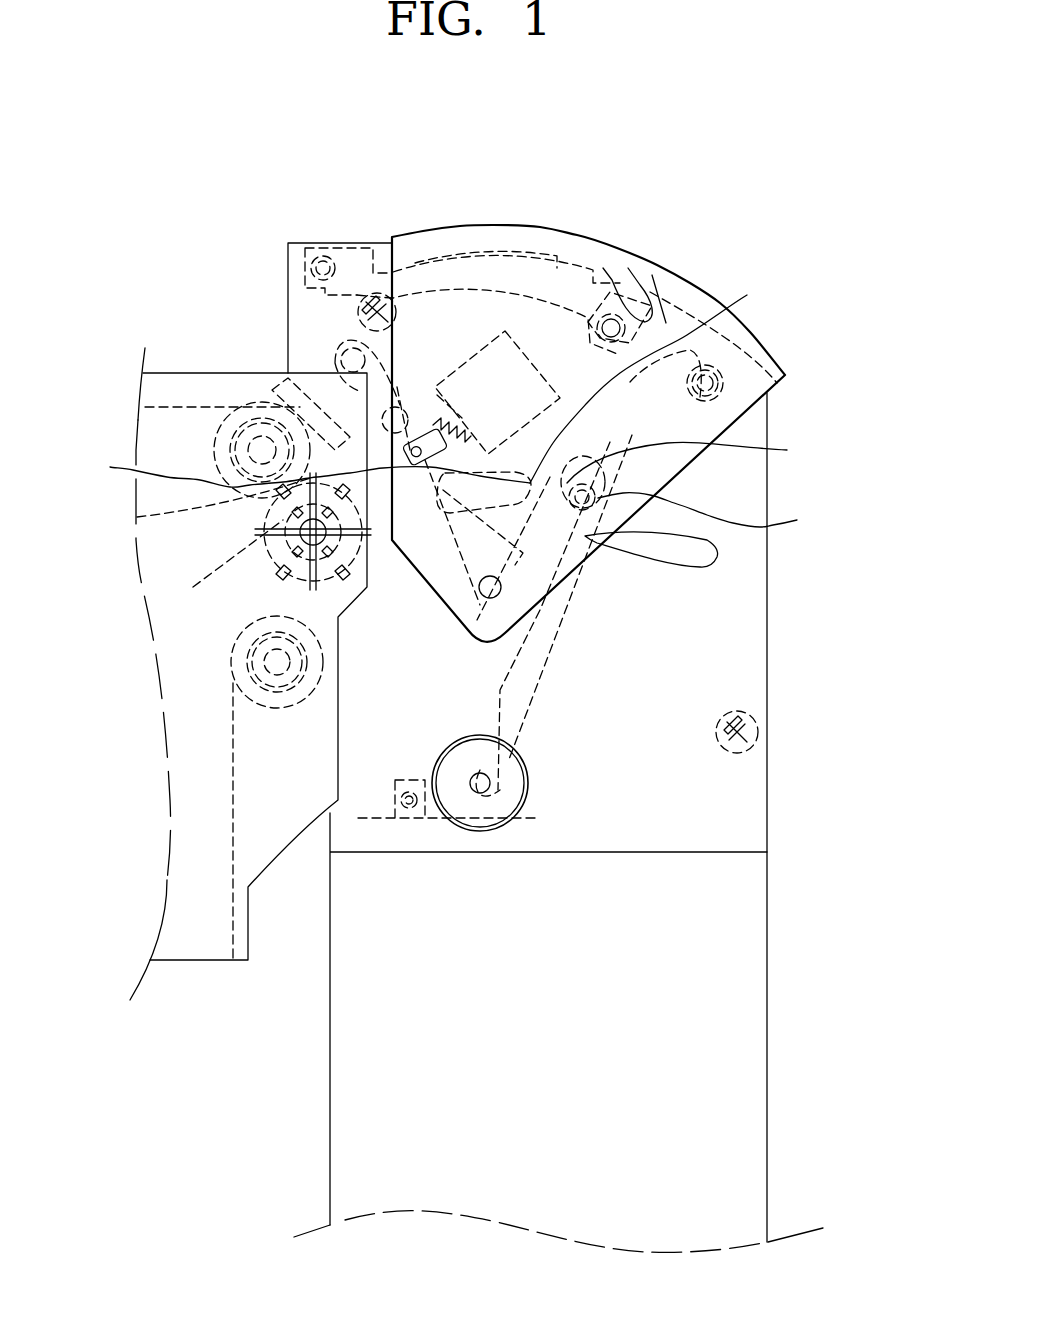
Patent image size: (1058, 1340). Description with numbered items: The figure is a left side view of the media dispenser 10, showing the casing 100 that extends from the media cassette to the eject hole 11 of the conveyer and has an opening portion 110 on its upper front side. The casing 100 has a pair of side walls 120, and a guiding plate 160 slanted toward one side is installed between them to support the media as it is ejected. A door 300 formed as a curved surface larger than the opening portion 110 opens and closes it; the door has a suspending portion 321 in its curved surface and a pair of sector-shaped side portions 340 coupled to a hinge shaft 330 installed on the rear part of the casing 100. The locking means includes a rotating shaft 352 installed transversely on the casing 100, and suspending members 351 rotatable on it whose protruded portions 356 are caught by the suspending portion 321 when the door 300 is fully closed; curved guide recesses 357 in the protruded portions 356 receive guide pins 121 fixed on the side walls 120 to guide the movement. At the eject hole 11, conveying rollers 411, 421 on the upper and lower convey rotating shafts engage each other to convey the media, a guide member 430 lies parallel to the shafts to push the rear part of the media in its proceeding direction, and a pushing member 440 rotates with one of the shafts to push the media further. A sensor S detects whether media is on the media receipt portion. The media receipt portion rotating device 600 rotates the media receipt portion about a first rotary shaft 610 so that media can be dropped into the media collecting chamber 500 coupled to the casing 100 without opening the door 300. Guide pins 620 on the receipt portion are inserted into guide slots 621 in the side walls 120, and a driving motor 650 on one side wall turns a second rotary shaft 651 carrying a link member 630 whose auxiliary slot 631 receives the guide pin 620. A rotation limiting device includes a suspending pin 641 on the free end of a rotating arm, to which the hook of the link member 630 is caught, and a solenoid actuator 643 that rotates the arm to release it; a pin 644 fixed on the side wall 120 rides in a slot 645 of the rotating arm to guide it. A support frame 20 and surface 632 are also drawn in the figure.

The media dispenser 10 is at (188, 948).
The eject hole 11 is at (383, 427).
The support frame 20 is at (340, 780).
The casing 100 is at (776, 830).
The opening portion 110 is at (742, 301).
The side walls 120 is at (747, 485).
The guide pins 121 is at (655, 270).
The guiding plate 160 is at (372, 568).
The door 300 is at (721, 319).
The suspending portion 321 is at (611, 290).
The hinge shaft 330 is at (497, 588).
The side portions 340 is at (458, 233).
The suspending members 351 is at (568, 262).
The rotating shaft 352 is at (323, 268).
The protruded portions 356 is at (628, 300).
The guide recesses 357 is at (648, 293).
The conveying rollers 411 is at (233, 420).
The conveying rollers 421 is at (290, 527).
The guide member 430 is at (270, 393).
The pushing member 440 is at (273, 495).
The media collecting chamber 500 is at (740, 995).
The media receipt portion rotating device 600 is at (536, 702).
The first rotary shaft 610 is at (710, 387).
The guide pins 620 is at (790, 523).
The guide slots 621 is at (700, 550).
The link member 630 is at (515, 710).
The auxiliary slot 631 is at (110, 467).
The second guide surface 632 is at (787, 450).
The suspending pin 641 is at (718, 340).
The actuator 643 is at (423, 405).
The pin 644 is at (380, 423).
The slot 645 is at (400, 405).
The driving motor 650 is at (450, 798).
The second rotary shaft 651 is at (478, 785).
The sensor S is at (370, 297).